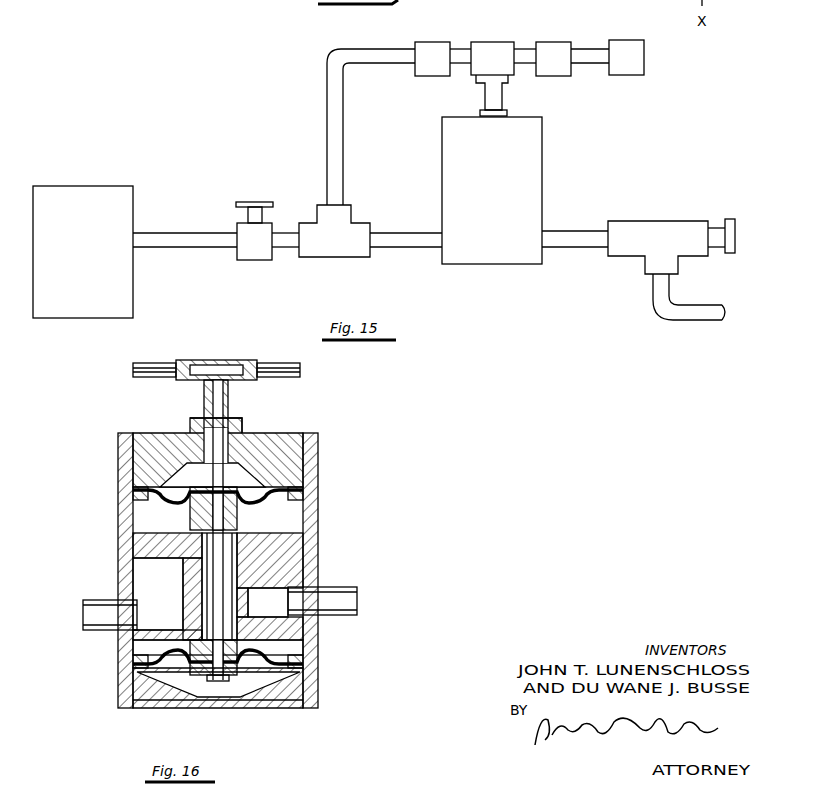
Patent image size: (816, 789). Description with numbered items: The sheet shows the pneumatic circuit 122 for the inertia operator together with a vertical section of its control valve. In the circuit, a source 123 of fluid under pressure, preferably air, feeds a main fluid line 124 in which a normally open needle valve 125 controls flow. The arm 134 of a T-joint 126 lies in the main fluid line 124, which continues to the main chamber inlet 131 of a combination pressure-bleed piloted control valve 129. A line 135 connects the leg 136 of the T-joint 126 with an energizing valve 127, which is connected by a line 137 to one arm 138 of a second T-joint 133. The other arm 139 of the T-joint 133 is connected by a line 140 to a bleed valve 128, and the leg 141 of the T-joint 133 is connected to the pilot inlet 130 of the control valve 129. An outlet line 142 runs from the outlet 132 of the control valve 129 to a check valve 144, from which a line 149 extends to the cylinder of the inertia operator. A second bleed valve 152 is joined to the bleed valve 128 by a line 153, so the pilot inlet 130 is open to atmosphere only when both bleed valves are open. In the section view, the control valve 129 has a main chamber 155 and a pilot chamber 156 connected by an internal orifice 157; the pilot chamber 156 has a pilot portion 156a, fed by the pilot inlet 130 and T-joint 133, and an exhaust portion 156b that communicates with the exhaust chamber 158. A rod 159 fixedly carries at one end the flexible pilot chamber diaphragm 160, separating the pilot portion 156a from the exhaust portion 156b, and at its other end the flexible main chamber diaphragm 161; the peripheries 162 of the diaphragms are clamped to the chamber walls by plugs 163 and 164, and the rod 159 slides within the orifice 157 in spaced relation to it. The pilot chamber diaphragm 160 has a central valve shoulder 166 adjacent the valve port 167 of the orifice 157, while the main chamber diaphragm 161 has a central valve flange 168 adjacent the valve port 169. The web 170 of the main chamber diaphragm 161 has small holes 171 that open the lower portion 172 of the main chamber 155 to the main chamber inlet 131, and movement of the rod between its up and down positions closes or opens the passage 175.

In FIG. 15, the pneumatic circuit 122 is at (415, 249).
In FIG. 15, the source of fluid under pressure 123 is at (52, 320).
In FIG. 15, the main fluid line 124 is at (183, 250).
In FIG. 16, the main fluid line 124 is at (88, 615).
In FIG. 15, the needle valve 125 is at (247, 262).
In FIG. 15, the T-connector 126 is at (350, 259).
In FIG. 15, the energizing valve 127 is at (430, 42).
In FIG. 15, the bleed valve 128 is at (565, 42).
In FIG. 15, the control valve 129 is at (543, 176).
In FIG. 16, the control valve 129 is at (118, 553).
In FIG. 15, the pilot inlet 130 is at (507, 114).
In FIG. 16, the pilot inlet 130 is at (204, 416).
In FIG. 15, the main chamber inlet 131 is at (440, 249).
In FIG. 16, the main chamber inlet 131 is at (136, 596).
In FIG. 15, the outlet 132 is at (547, 262).
In FIG. 16, the outlet 132 is at (300, 615).
In FIG. 15, the T-joint 133 is at (500, 42).
In FIG. 16, the T-joint 133 is at (208, 360).
In FIG. 15, the arm 134 is at (312, 252).
In FIG. 15, the line 135 is at (343, 173).
In FIG. 15, the leg 136 is at (352, 216).
In FIG. 15, the line 137 is at (461, 48).
In FIG. 16, the line 137 is at (157, 362).
In FIG. 15, the arm 138 is at (473, 80).
In FIG. 15, the arm 139 is at (514, 80).
In FIG. 15, the line 140 is at (528, 48).
In FIG. 16, the line 140 is at (268, 362).
In FIG. 15, the leg 141 is at (482, 102).
In FIG. 15, the outlet line 142 is at (576, 230).
In FIG. 16, the outlet line 142 is at (358, 599).
In FIG. 15, the check valve 144 is at (663, 221).
In FIG. 15, the line 149 is at (680, 323).
In FIG. 15, the second bleed valve 152 is at (637, 40).
In FIG. 15, the line 153 is at (593, 49).
In FIG. 16, the main chamber 155 is at (205, 690).
In FIG. 16, the pilot chamber 156 is at (247, 467).
In FIG. 16, the pilot portion 156a is at (193, 467).
In FIG. 16, the exhaust portion 156b is at (305, 506).
In FIG. 16, the internal orifice 157 is at (240, 578).
In FIG. 16, the exhaust chamber 158 is at (127, 572).
In FIG. 16, the rod 159 is at (225, 558).
In FIG. 16, the pilot chamber diaphragm 160 is at (133, 522).
In FIG. 16, the main chamber diaphragm 161 is at (292, 704).
In FIG. 16, the peripheries 162 is at (133, 493).
In FIG. 16, the plug 163 is at (146, 436).
In FIG. 16, the plug 164 is at (142, 706).
In FIG. 16, the valve shoulder 166 is at (190, 524).
In FIG. 16, the valve port 167 is at (258, 522).
In FIG. 16, the valve flange 168 is at (140, 651).
In FIG. 16, the valve port 169 is at (238, 604).
In FIG. 16, the web 170 is at (305, 658).
In FIG. 16, the small holes 171 is at (167, 670).
In FIG. 16, the lower portion 172 is at (229, 686).
In FIG. 16, the passage 175 is at (133, 641).